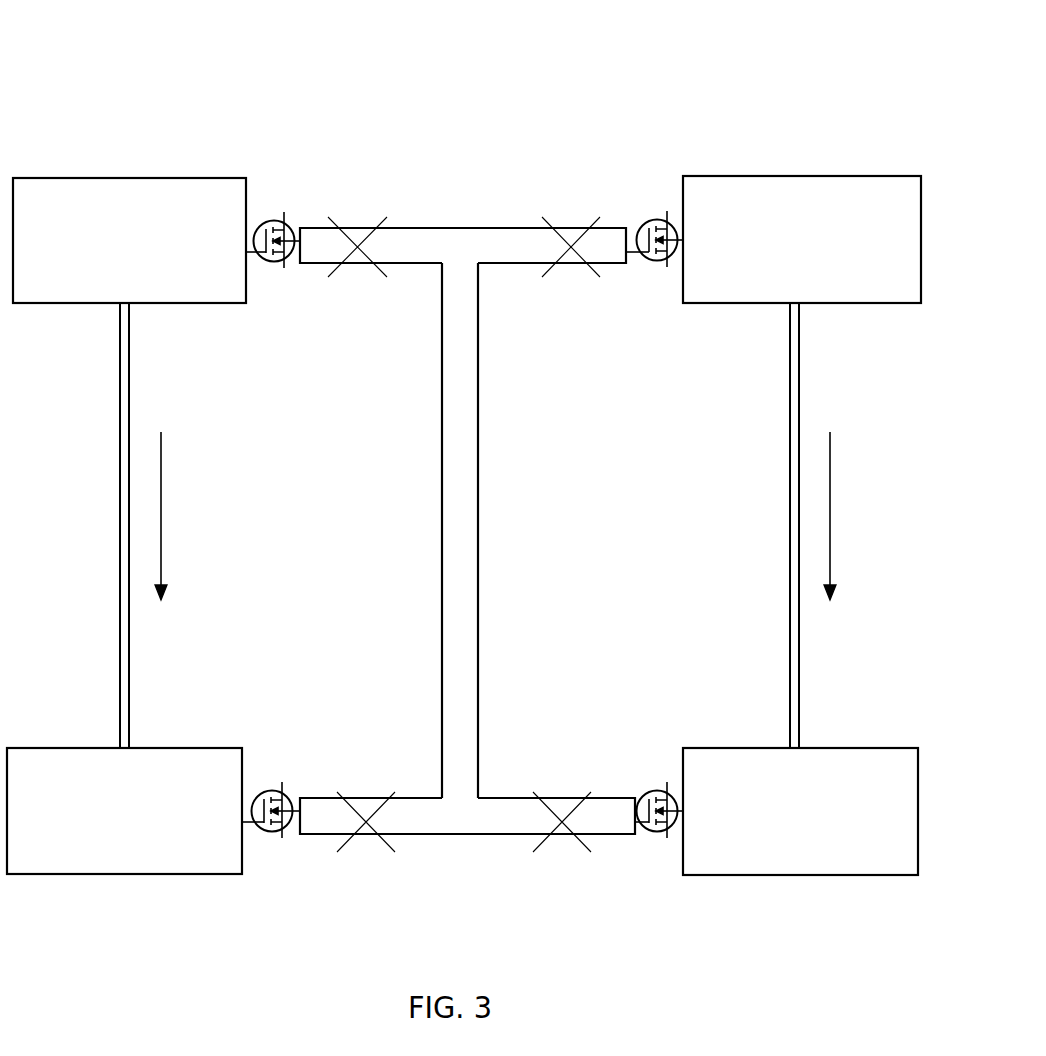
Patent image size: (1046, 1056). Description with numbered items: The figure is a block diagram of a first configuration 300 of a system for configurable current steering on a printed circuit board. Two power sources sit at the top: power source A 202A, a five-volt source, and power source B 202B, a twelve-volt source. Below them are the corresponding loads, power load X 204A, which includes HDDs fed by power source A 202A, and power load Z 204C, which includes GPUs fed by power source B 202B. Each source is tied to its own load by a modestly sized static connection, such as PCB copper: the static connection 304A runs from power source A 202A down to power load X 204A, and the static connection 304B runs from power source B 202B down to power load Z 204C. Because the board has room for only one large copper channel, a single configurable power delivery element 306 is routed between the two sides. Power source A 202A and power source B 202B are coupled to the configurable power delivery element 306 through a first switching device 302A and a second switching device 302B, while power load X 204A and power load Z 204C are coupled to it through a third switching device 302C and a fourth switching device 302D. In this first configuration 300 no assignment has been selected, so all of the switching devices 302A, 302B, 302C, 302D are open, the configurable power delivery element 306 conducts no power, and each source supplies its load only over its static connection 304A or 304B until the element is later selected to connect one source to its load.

The first configuration 300 is at (100, 70).
The power source A 202A is at (106, 280).
The power source B 202B is at (778, 280).
The power load X 204A is at (100, 850).
The power load Z 204C is at (776, 851).
The first switching device 302A is at (258, 294).
The second switching device 302B is at (630, 294).
The third switching device 302C is at (250, 870).
The fourth switching device 302D is at (630, 870).
The static connection 304A is at (110, 527).
The static connection 304B is at (772, 527).
The configurable power delivery element 306 is at (430, 528).